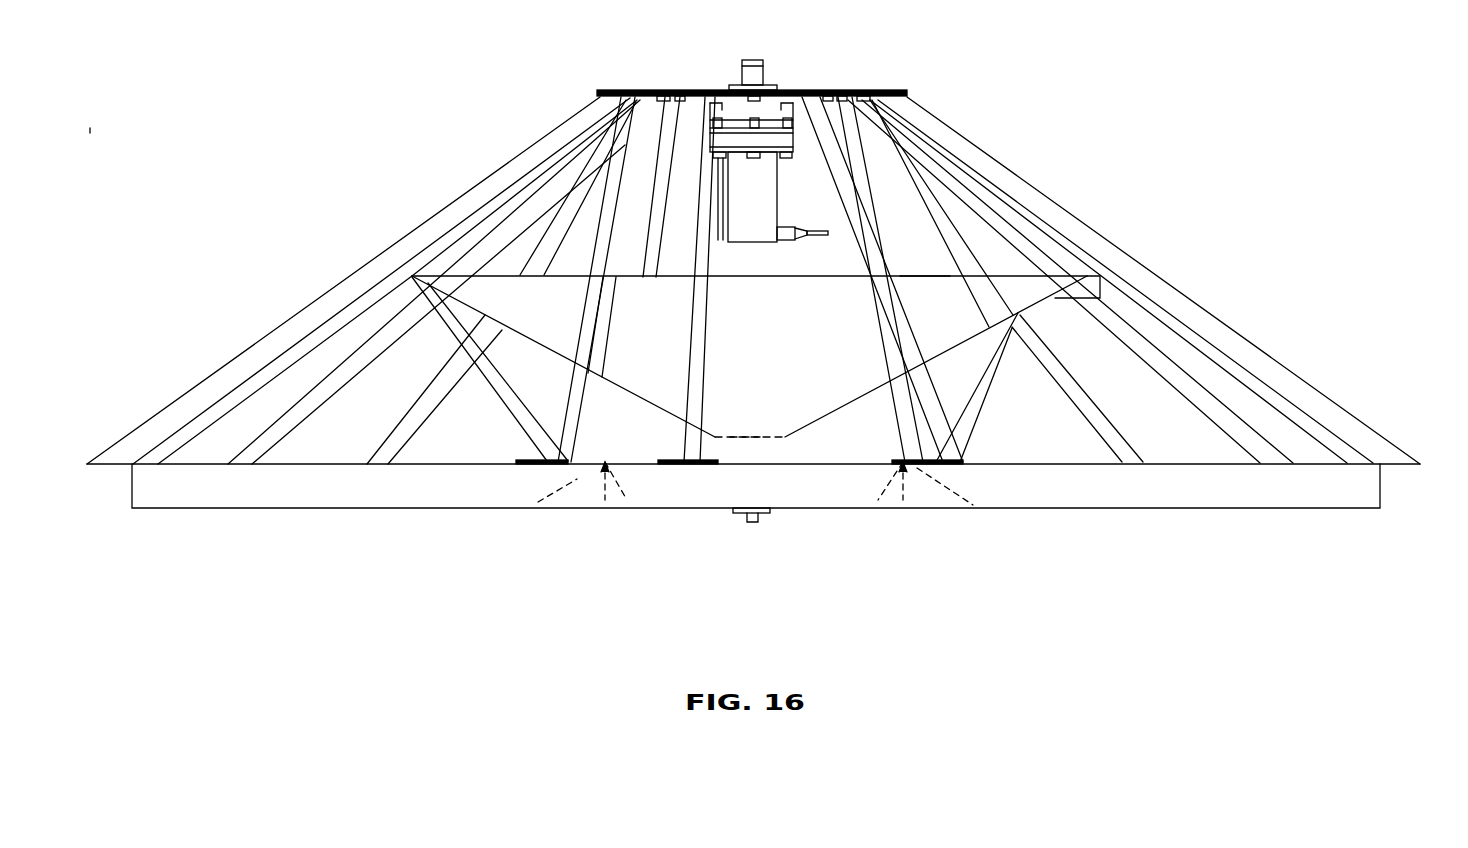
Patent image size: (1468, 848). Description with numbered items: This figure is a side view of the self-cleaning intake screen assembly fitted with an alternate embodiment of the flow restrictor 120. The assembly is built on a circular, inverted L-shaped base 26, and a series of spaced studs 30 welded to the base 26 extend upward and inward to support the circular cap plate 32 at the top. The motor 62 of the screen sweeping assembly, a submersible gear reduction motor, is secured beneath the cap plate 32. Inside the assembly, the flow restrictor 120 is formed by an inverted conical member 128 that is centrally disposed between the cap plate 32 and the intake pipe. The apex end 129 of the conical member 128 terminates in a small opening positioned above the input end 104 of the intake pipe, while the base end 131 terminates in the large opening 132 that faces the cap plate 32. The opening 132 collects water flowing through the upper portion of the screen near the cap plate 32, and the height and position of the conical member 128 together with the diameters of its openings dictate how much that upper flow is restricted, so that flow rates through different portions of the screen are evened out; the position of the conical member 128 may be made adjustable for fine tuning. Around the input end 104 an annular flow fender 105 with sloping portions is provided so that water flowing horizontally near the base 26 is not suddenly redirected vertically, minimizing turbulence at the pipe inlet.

The base 26 is at (1385, 488).
The studs 30 is at (273, 328).
The cap plate 32 is at (838, 91).
The motor 62 is at (762, 208).
The input end 104 is at (607, 497).
The flow fender 105 is at (572, 481).
The flow restrictor 120 is at (510, 283).
The conical member 128 is at (777, 318).
The apex end 129 is at (787, 438).
The base end 131 is at (923, 278).
The opening 132 is at (675, 268).